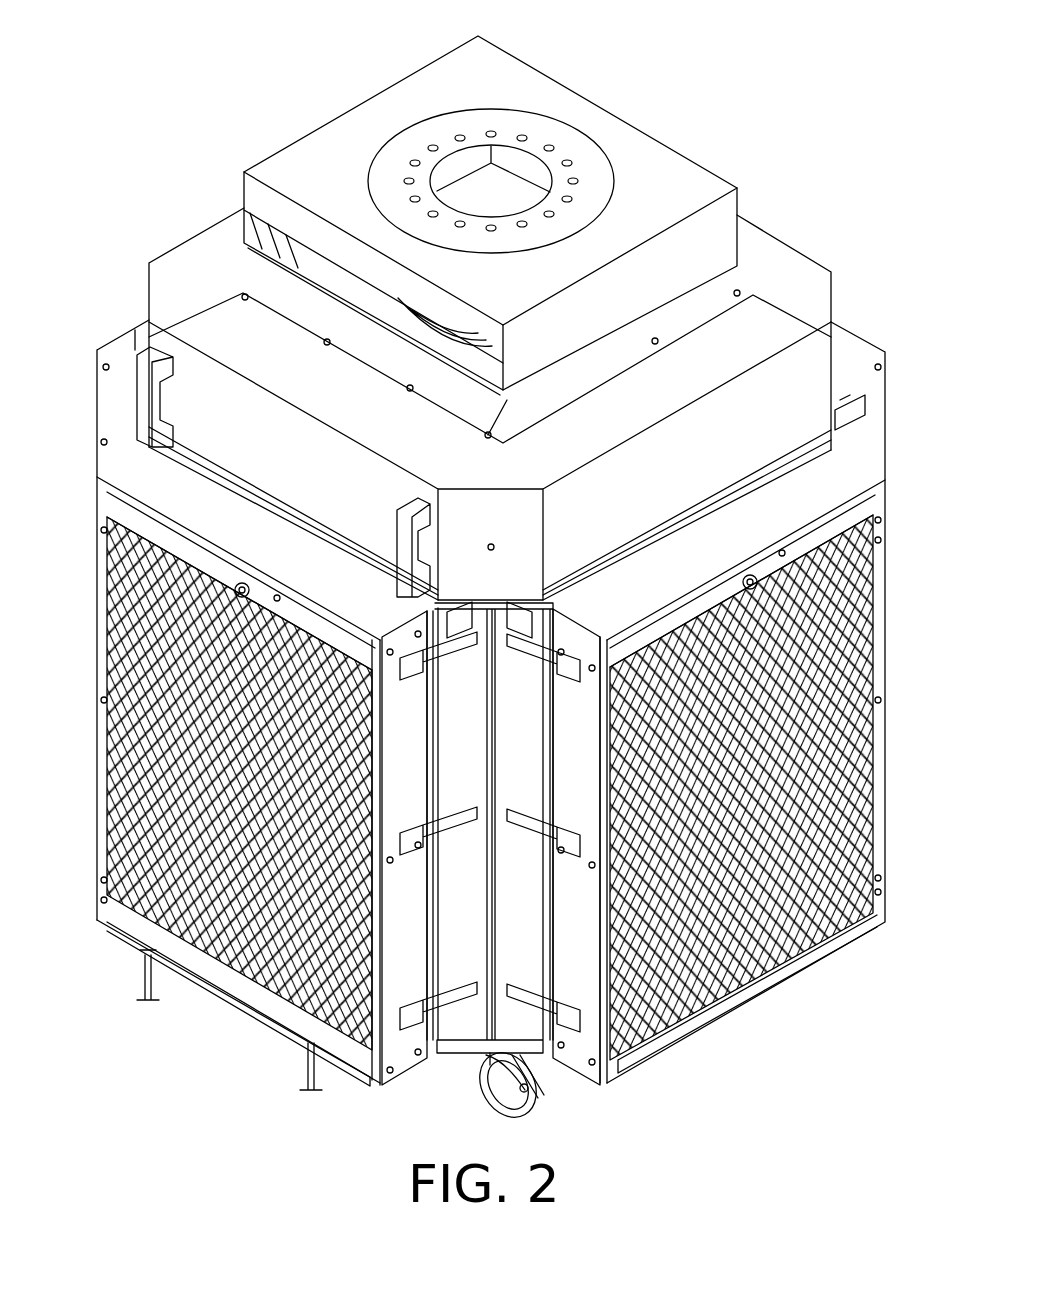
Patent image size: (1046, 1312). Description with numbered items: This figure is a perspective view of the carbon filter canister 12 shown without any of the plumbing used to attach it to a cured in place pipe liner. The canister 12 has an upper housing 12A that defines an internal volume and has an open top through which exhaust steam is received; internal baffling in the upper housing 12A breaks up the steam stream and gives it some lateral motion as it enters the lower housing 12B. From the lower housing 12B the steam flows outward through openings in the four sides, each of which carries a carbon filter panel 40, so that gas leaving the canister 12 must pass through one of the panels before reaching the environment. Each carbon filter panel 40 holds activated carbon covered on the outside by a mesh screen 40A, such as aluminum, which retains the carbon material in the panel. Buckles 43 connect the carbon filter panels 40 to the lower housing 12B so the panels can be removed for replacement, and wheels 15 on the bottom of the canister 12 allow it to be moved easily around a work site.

The carbon filter canister 12 is at (775, 88).
The upper housing 12A is at (533, 63).
The lower housing 12B is at (440, 920).
The wheels 15 is at (523, 1113).
The carbon filter panel 40 is at (120, 327).
The mesh screen 40A is at (150, 808).
The buckles 43 is at (838, 412).